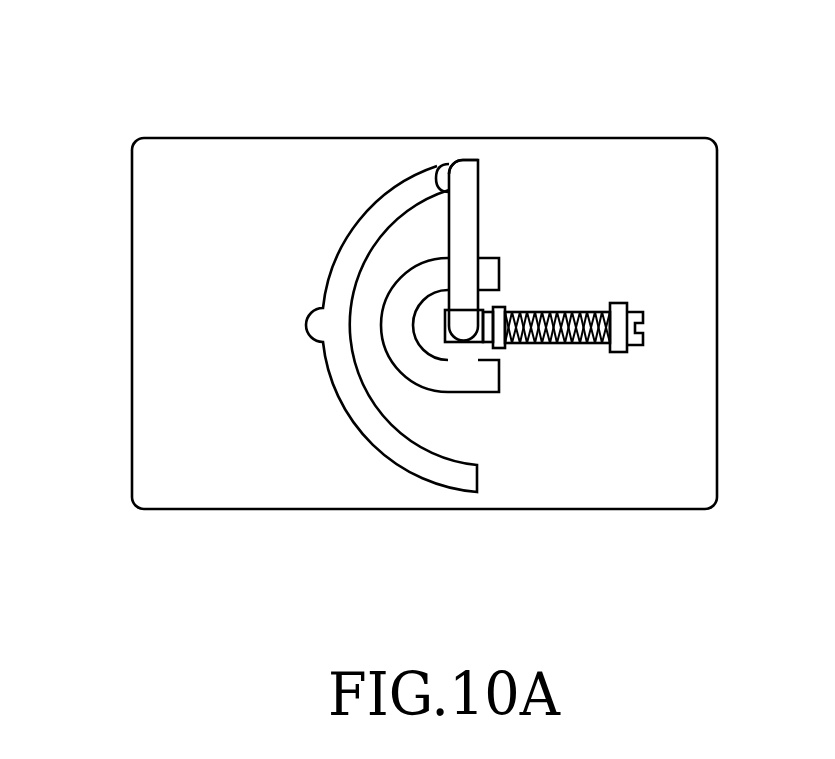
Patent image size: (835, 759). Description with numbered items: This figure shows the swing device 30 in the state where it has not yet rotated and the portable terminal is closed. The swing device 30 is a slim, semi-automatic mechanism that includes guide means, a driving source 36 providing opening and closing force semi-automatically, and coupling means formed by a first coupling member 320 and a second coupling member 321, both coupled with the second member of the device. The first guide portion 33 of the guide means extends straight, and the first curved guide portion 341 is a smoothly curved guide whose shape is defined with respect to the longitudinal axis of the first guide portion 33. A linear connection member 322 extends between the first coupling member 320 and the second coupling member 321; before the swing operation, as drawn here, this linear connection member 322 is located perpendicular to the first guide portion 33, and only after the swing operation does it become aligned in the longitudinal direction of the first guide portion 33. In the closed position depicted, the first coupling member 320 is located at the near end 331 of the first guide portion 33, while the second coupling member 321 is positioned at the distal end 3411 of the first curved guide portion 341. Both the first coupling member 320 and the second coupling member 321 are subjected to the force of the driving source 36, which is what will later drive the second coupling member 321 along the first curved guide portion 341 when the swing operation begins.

The swing device 30 is at (61, 322).
The first curved guide portion 341 is at (367, 230).
The second coupling member 321 is at (443, 163).
The distal end of the first curved guide portion 3411 is at (479, 160).
The linear connection member 322 is at (467, 225).
The first coupling member 320 is at (458, 342).
The near end of the first guide portion 331 is at (445, 330).
The first guide portion 33 is at (572, 308).
The driving source 36 is at (644, 316).